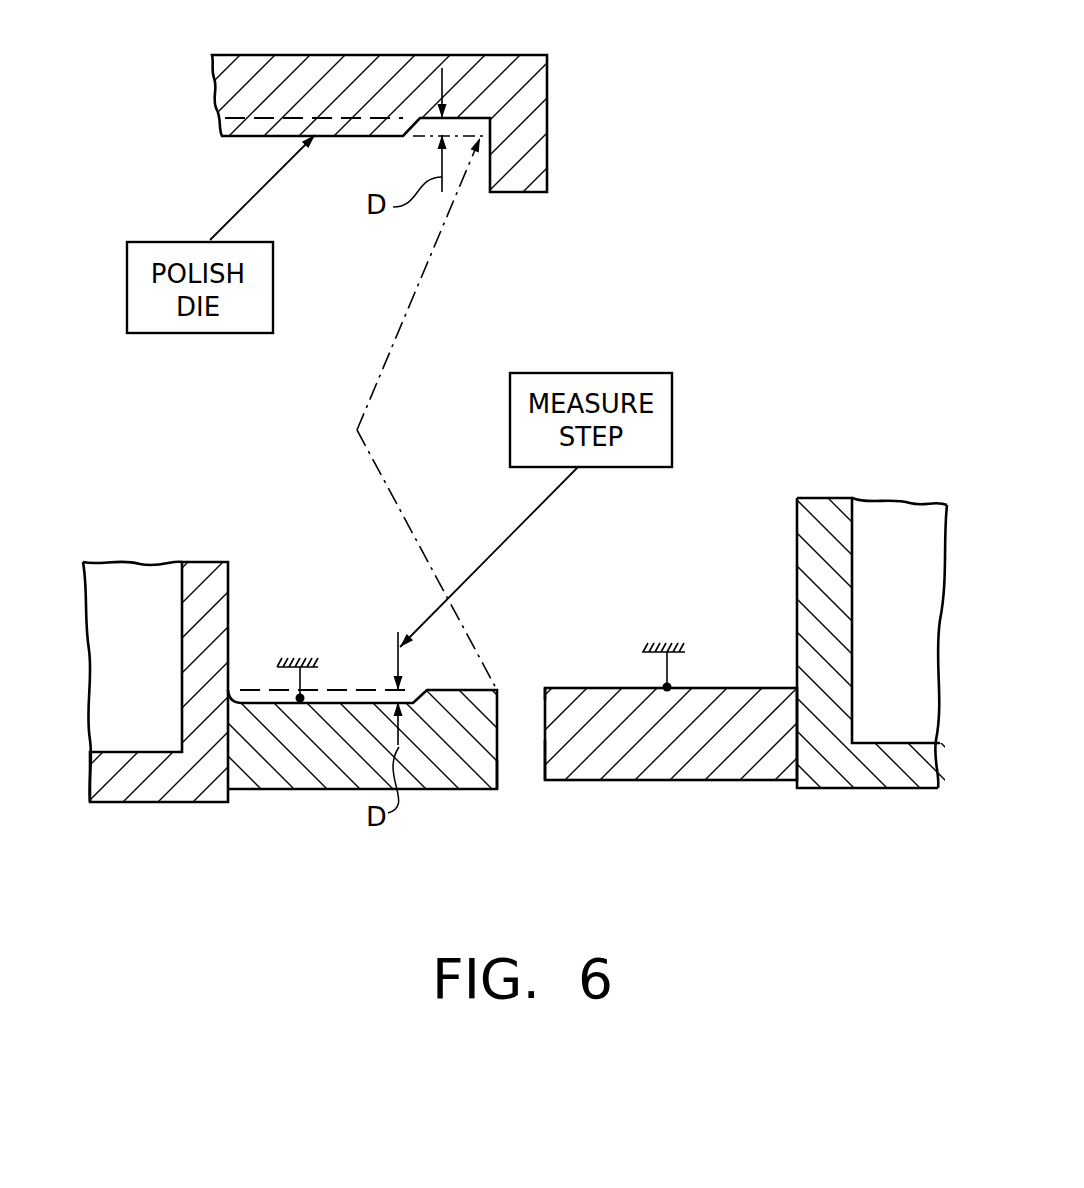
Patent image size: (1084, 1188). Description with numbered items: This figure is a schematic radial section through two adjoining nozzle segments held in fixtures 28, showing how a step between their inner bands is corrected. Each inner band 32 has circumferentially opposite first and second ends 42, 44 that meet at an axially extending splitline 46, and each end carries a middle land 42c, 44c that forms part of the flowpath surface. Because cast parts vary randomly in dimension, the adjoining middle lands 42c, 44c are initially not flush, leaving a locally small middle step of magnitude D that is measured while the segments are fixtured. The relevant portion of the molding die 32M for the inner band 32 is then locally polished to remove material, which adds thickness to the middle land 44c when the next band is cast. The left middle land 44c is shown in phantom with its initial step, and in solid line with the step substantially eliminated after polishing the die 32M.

The molding die 32M is at (357, 55).
The fixture / chuck 28 is at (142, 562).
The inner band 32 is at (352, 758).
The middle land 44c is at (326, 703).
The middle land 42c is at (748, 688).
The splitline 46 is at (523, 693).
The first end 42 is at (545, 757).
The second end 44 is at (497, 770).